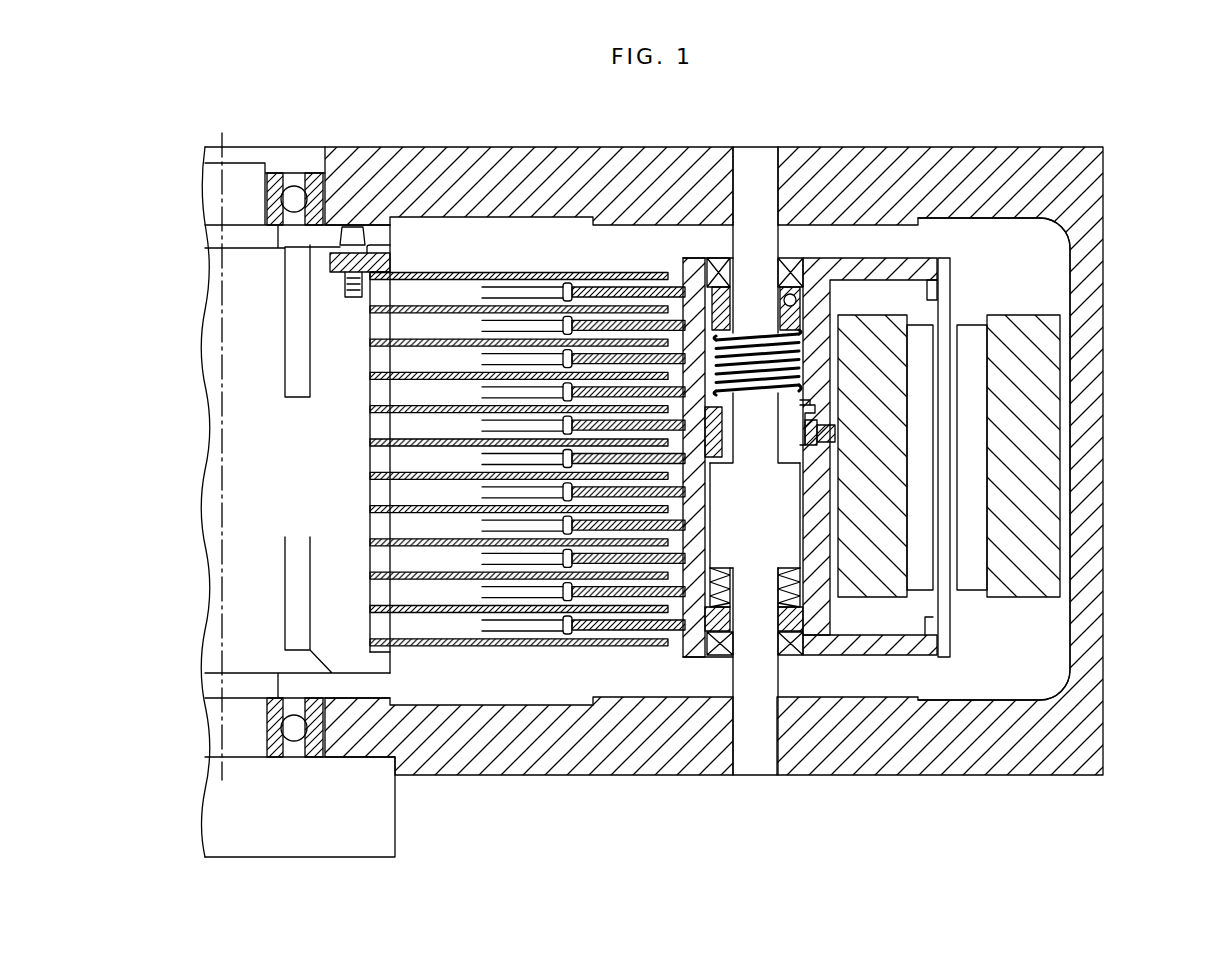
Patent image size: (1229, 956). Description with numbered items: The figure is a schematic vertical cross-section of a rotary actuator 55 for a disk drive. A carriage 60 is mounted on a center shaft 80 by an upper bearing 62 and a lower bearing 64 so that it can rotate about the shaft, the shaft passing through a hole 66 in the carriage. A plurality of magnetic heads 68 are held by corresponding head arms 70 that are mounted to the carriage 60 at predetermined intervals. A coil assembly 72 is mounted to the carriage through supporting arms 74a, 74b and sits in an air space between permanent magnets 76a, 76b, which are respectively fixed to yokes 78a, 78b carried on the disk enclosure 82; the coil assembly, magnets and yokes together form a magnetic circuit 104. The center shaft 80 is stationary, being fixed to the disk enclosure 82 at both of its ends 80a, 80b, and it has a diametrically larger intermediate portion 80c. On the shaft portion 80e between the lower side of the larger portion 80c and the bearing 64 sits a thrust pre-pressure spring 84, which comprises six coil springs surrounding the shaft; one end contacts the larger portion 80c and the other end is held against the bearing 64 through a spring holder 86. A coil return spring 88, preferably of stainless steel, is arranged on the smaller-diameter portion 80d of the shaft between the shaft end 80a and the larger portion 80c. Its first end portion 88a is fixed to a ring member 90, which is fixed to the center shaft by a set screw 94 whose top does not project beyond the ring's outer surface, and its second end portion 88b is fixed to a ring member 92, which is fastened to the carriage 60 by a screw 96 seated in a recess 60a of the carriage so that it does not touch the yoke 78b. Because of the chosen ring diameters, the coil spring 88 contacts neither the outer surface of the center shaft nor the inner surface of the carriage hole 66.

The rotary actuator 55 is at (1004, 461).
The carriage 60 is at (688, 650).
The recess 60a is at (818, 425).
The bearing 62 is at (720, 258).
The bearing 64 is at (793, 655).
The hole 66 is at (790, 680).
The magnetic heads 68 is at (493, 297).
The head arms 70 is at (587, 600).
The coil assembly 72 is at (943, 323).
The supporting arm 74a is at (895, 262).
The supporting arm 74b is at (918, 652).
The permanent magnet 76a is at (968, 583).
The permanent magnet 76b is at (918, 577).
The yoke 78a is at (1043, 585).
The yoke 78b is at (868, 590).
The center shaft 80 is at (757, 607).
The shaft end 80a is at (758, 170).
The shaft end 80b is at (755, 748).
The intermediate portion 80c is at (774, 532).
The smaller diameter portion 80d is at (774, 441).
The shaft portion 80e is at (755, 673).
The disk enclosure 82 is at (1070, 770).
The thrust pre-pressure spring 84 is at (835, 575).
The spring holder 86 is at (795, 612).
The coil return spring 88 is at (800, 355).
The first end portion 88a is at (805, 330).
The second end portion 88b is at (805, 408).
The ring member 90 is at (700, 303).
The ring member 92 is at (805, 455).
The set screw 94 is at (805, 290).
The screw 96 is at (822, 437).
The magnetic circuit 104 is at (1043, 303).